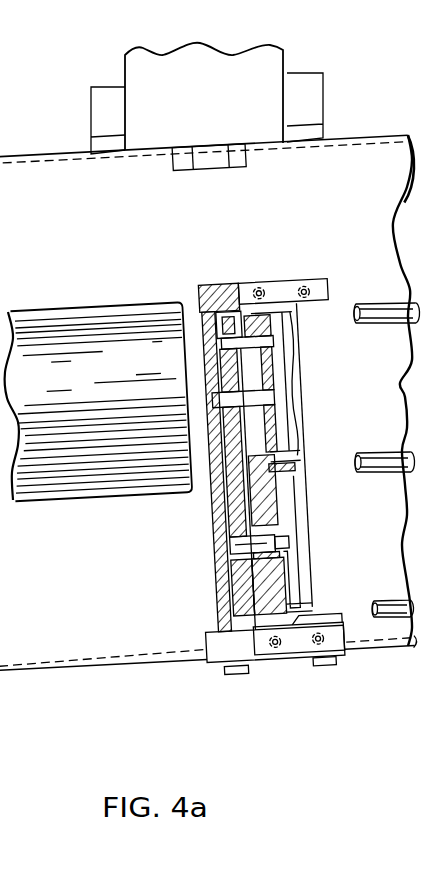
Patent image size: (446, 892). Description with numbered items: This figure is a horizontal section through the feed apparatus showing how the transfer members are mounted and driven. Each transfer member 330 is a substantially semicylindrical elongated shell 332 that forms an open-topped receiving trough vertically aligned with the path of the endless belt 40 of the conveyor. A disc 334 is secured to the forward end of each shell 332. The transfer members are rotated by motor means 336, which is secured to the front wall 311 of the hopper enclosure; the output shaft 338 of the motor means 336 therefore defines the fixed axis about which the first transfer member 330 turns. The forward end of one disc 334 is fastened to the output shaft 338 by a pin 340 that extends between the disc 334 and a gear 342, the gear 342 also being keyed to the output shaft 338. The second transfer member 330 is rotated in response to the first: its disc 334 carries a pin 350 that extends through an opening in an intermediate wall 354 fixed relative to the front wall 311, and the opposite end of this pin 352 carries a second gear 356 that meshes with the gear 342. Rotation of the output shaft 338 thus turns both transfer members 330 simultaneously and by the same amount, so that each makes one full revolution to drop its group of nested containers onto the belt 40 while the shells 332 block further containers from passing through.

The front wall 311 is at (217, 593).
The transfer member 330 is at (283, 308).
The semicylindrical shell 332 is at (333, 616).
The disc 334 is at (293, 357).
The motor means 336 is at (97, 322).
The output shaft 338 is at (207, 390).
The pin 340 is at (241, 336).
The gear 342 is at (203, 378).
The pin 350 is at (253, 545).
The pin 352 is at (280, 543).
The intermediate wall 354 is at (260, 617).
The second gear 356 is at (230, 511).
The endless belt 40 is at (8, 733).